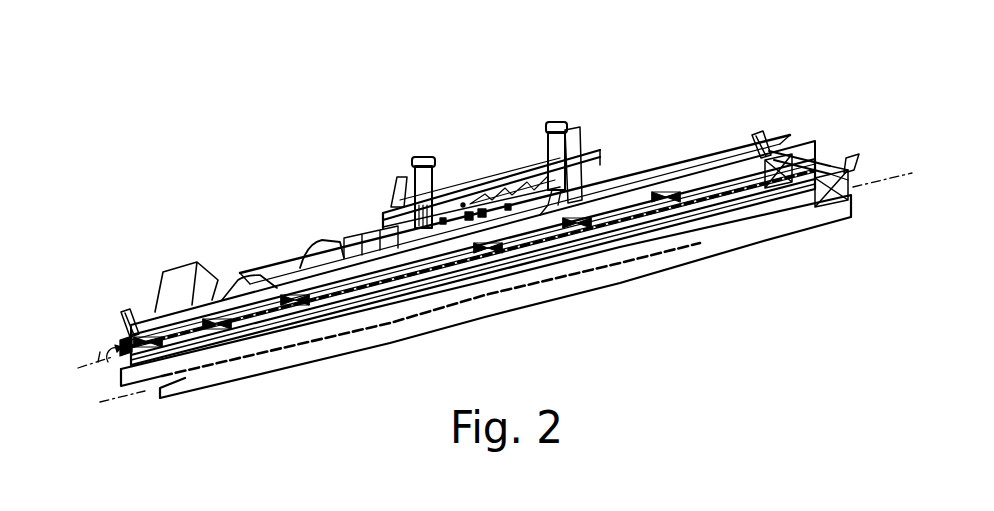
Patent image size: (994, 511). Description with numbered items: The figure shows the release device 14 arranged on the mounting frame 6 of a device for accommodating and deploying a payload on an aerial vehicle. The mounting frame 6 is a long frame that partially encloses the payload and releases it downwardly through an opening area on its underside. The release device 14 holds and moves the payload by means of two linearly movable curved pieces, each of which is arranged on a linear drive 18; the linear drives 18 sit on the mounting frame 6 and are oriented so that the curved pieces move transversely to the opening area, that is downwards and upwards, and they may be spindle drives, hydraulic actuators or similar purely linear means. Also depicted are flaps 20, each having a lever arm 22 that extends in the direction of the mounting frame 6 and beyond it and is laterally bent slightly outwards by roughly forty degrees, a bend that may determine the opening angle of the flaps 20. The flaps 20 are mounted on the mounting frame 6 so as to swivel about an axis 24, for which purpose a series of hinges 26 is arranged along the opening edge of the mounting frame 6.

The mounting frame 6 is at (583, 198).
The release device 14 is at (554, 120).
The linear drive 18 is at (553, 135).
The flap 20 is at (780, 160).
The lever arm 22 is at (130, 322).
The axis 24 is at (100, 357).
The hinge 26 is at (140, 333).